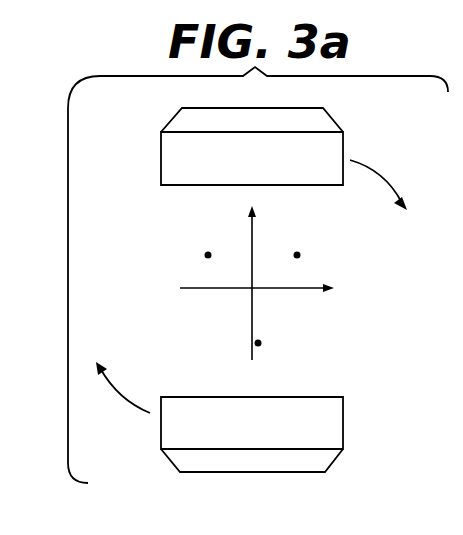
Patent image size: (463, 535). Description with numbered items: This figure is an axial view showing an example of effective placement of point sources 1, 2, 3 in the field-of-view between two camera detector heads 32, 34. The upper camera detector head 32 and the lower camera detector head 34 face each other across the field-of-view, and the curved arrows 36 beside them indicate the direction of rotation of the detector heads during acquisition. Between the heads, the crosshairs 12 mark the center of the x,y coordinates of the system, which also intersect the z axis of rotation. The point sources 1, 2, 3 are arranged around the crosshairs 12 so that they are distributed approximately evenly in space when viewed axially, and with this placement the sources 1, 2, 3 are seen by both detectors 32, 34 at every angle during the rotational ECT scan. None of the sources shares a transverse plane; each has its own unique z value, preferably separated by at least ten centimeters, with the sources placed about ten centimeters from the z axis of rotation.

The camera detector head 32 is at (161, 160).
The camera detector head 34 is at (343, 425).
The arrows 36 is at (381, 177).
The crosshairs 12 is at (216, 290).
The point source 1 is at (200, 256).
The point source 2 is at (268, 345).
The point source 3 is at (306, 256).